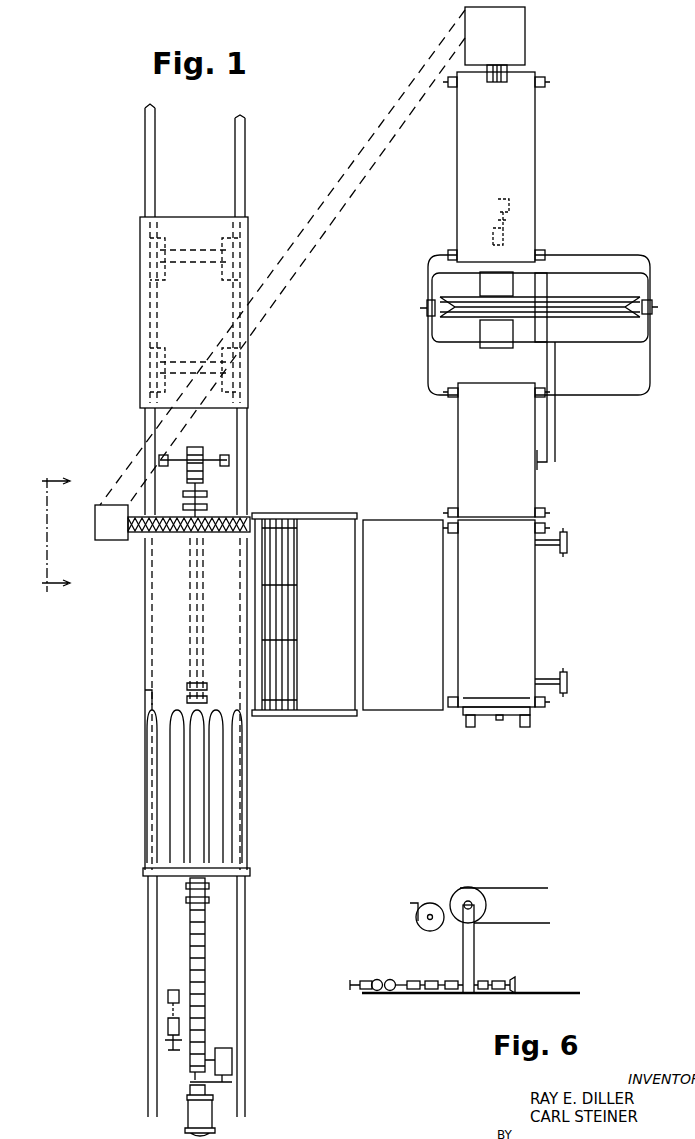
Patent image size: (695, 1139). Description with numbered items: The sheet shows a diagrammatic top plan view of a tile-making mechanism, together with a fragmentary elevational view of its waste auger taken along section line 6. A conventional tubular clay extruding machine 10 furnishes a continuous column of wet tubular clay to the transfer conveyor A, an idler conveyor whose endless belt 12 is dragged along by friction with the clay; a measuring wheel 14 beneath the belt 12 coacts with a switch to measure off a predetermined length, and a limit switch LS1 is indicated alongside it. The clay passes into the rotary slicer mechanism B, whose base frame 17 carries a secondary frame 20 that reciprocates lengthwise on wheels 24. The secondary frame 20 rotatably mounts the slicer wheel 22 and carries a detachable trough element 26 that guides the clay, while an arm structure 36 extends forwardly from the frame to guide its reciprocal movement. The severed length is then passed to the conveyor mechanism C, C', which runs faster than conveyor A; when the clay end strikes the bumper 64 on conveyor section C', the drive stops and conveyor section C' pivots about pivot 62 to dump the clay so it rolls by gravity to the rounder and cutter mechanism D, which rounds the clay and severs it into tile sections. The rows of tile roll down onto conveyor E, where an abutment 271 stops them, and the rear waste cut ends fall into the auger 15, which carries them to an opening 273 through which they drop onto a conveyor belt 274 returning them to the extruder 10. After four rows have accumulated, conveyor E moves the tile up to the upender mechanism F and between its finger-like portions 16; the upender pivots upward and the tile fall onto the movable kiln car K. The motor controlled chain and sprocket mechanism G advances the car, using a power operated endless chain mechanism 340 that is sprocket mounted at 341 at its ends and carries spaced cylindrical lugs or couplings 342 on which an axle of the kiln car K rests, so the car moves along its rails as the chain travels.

In FIG. 1, the tubular clay extruding machine 10 is at (525, 50).
In FIG. 1, the endless belt 12 is at (530, 176).
In FIG. 1, the limit switch LS1 is at (510, 208).
In FIG. 1, the measuring wheel 14 is at (505, 236).
In FIG. 1, the slicer wheel 22 is at (608, 294).
In FIG. 1, the wheels 24 is at (678, 306).
In FIG. 1, the trough element 26 is at (480, 287).
In FIG. 1, the secondary frame 20 is at (636, 348).
In FIG. 1, the base frame 17 is at (652, 378).
In FIG. 1, the arm structure 36 is at (557, 441).
In FIG. 1, the pivot 62 is at (566, 672).
In FIG. 1, the bumper 64 is at (513, 696).
In FIG. 1, the conveyor belt 274 is at (278, 299).
In FIG. 1, the opening 273 is at (95, 530).
In FIG. 1, the auger 15 is at (250, 517).
In FIG. 6, the auger 15 is at (436, 904).
In FIG. 1, the sprocket mounting 341 is at (203, 452).
In FIG. 1, the lugs or couplings 342 is at (207, 500).
In FIG. 6, the lugs or couplings 342 is at (392, 980).
In FIG. 1, the abutment 271 is at (145, 692).
In FIG. 1, the finger-like portions 16 is at (215, 775).
In FIG. 1, the endless chain mechanism 340 is at (205, 966).
In FIG. 6, the endless chain mechanism 340 is at (505, 980).
In FIG. 1, the section line 6 is at (62, 533).
In FIG. 1, the kiln car K is at (252, 228).
In FIG. 1, the transfer conveyor A is at (508, 167).
In FIG. 1, the rotary slicer mechanism B is at (540, 321).
In FIG. 1, the conveyor mechanism C is at (507, 450).
In FIG. 1, the conveyor section C' is at (509, 623).
In FIG. 1, the rounder and cutter mechanism D is at (322, 511).
In FIG. 1, the conveyor E is at (136, 586).
In FIG. 6, the conveyor E is at (548, 884).
In FIG. 1, the upender mechanism F is at (260, 877).
In FIG. 1, the motor controlled chain and sprocket mechanism G is at (160, 1051).